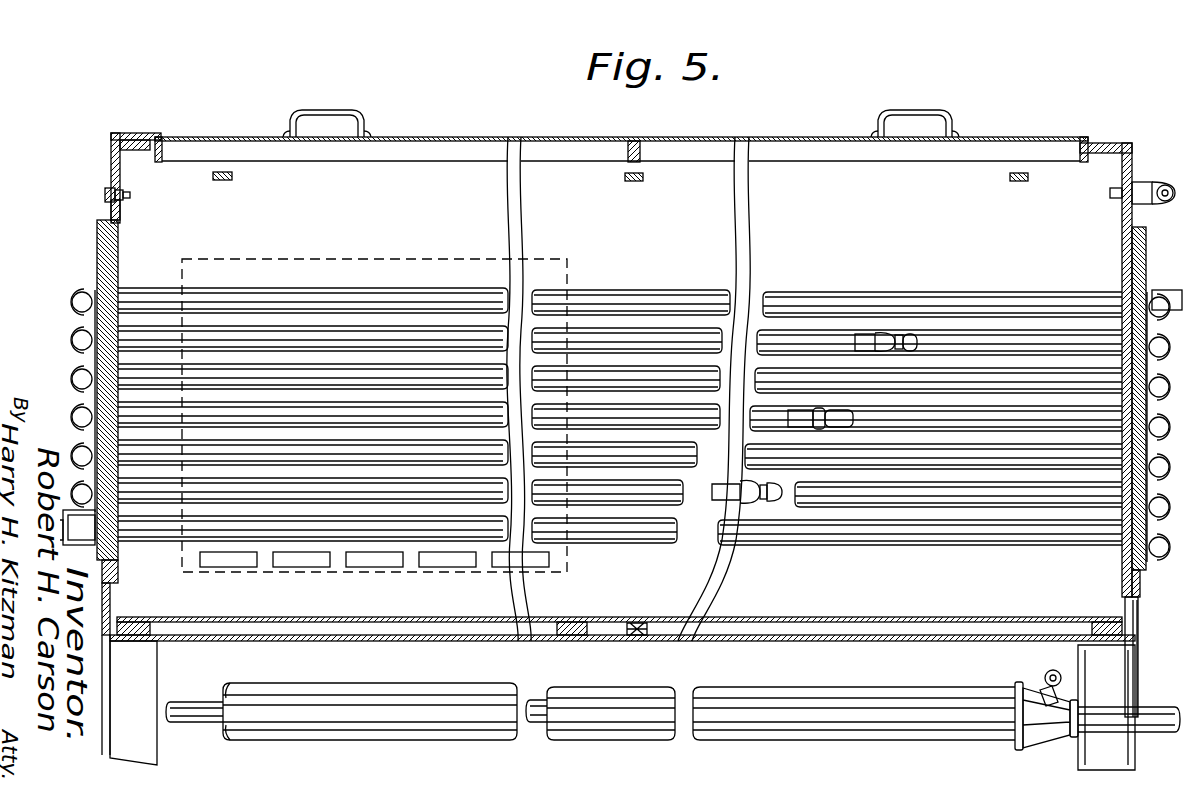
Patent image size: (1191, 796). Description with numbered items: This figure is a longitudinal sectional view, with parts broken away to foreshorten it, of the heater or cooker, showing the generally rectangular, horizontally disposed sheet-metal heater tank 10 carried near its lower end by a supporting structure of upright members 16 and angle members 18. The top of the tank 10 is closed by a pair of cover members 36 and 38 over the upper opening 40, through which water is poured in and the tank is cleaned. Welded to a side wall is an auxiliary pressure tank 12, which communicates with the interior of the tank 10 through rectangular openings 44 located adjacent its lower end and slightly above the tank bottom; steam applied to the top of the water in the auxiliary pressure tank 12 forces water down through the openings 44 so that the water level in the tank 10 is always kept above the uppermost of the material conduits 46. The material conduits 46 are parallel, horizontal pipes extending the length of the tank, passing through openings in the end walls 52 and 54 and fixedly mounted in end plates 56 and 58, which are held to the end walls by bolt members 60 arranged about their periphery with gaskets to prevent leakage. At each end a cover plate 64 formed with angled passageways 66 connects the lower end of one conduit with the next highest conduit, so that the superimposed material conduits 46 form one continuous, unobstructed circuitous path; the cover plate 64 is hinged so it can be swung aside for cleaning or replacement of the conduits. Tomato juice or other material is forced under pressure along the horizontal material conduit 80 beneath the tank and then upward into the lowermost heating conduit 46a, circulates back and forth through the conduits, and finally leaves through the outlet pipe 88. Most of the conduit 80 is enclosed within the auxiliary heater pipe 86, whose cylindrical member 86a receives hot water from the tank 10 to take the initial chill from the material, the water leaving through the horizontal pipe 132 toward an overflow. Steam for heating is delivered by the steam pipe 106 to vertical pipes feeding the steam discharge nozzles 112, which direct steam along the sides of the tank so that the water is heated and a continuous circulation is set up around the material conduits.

The heater tank 10 is at (832, 224).
The auxiliary pressure tank 12 is at (330, 258).
The upright member 16 is at (140, 683).
The angle member 18 is at (613, 643).
The cover member 36 is at (425, 137).
The cover member 38 is at (792, 134).
The upper opening 40 is at (178, 132).
The rectangular opening 44 is at (300, 560).
The material conduit 46 is at (665, 345).
The lowermost heating conduit 46a is at (756, 534).
The end wall 52 is at (120, 242).
The end wall 54 is at (1122, 253).
The end plate 56 is at (72, 345).
The end plate 58 is at (1120, 387).
The bolt member 60 is at (105, 196).
The cover plate 64 is at (62, 375).
The passageway 66 is at (70, 300).
The material conduit 80 is at (200, 715).
The auxiliary heater pipe 86 is at (925, 708).
The cylindrical member 86a is at (386, 684).
The outlet pipe 88 is at (1175, 292).
The steam pipe 106 is at (1130, 190).
The steam discharge nozzle 112 is at (896, 336).
The horizontal pipe 132 is at (1045, 675).